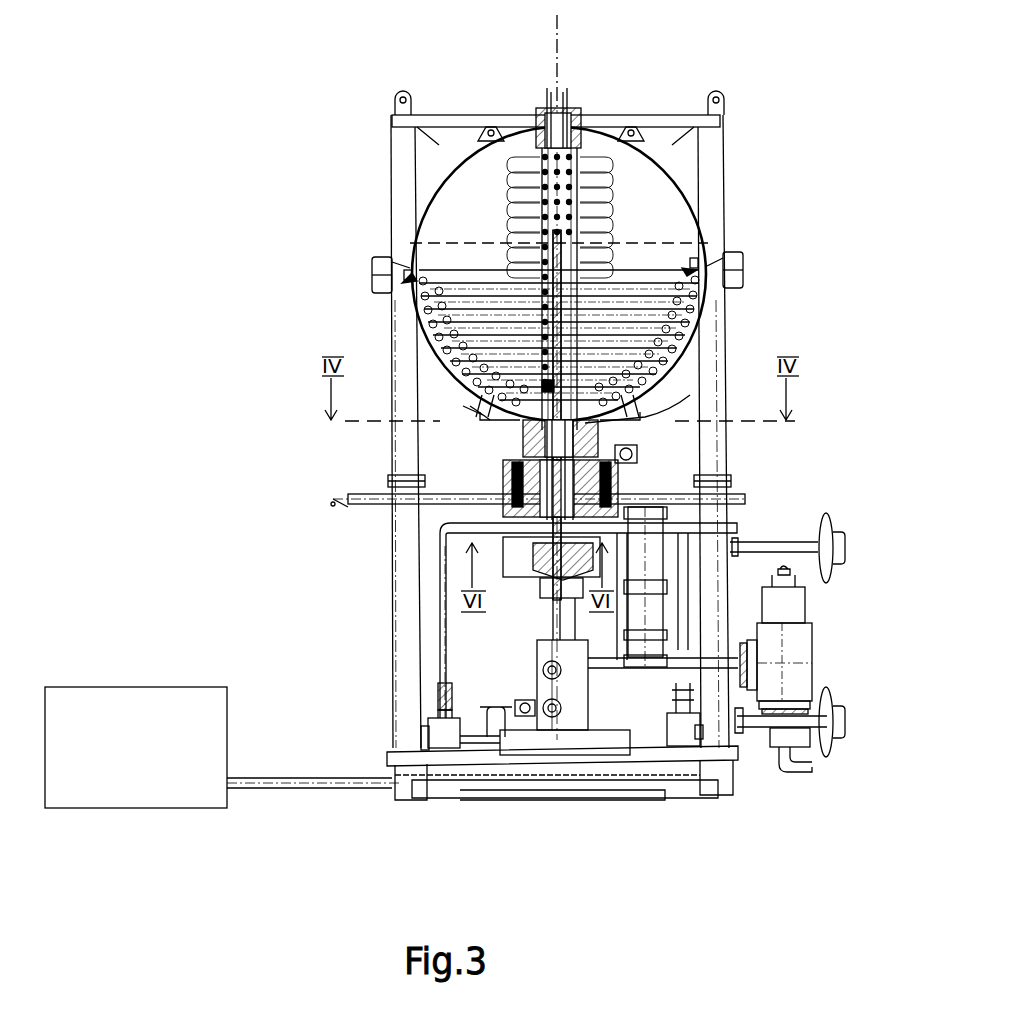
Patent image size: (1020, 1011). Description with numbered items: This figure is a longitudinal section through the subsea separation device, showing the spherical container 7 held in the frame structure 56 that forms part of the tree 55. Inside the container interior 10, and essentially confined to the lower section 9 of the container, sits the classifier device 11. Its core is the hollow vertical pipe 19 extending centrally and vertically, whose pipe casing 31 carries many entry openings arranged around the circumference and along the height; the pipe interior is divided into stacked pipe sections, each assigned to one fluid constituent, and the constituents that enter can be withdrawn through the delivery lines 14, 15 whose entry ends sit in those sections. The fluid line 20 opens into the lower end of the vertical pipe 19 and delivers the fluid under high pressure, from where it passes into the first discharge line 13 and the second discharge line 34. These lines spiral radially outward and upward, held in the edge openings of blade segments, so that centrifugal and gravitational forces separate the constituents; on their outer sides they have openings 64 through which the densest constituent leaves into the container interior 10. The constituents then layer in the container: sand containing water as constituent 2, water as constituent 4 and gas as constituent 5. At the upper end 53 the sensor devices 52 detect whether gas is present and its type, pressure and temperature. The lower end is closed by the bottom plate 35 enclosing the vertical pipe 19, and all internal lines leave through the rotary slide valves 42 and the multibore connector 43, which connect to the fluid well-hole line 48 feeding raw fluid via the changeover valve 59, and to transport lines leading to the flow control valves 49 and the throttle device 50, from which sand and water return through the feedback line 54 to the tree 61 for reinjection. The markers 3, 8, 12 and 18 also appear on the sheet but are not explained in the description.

The constituent (sand containing water) 2 is at (645, 401).
The trunnion bearing 3 is at (660, 255).
The constituent (water) 4 is at (665, 318).
The constituent (gas) 5 is at (658, 198).
The spherical container 7 is at (470, 177).
The base frame 8 is at (427, 640).
The lower section of the container 9 is at (303, 283).
The container interior 10 is at (491, 204).
The classifier device 11 is at (655, 229).
The axis direction 12 is at (605, 50).
The first discharge line 13 is at (425, 304).
The delivery line 14 is at (565, 310).
The delivery line 15 is at (585, 332).
The bearing pin 18 is at (435, 252).
The vertical pipe 19 is at (577, 150).
The fluid line 20 is at (515, 426).
The pipe casing 31 is at (580, 195).
The second discharge line 34 is at (415, 242).
The bottom plate 35 is at (515, 460).
The rotary slide valves 42 is at (612, 436).
The multibore connector 43 is at (640, 460).
The fluid well-hole line 48 is at (440, 610).
The flow control valves 49 is at (655, 540).
The throttle device 50 is at (788, 650).
The sensor devices 52 is at (555, 92).
The upper end 53 is at (506, 132).
The feedback line 54 is at (331, 796).
The tree 55 is at (294, 488).
The frame structure 56 is at (727, 130).
The changeover valve 59 is at (443, 760).
The tree 61 is at (150, 796).
The openings 64 is at (473, 397).